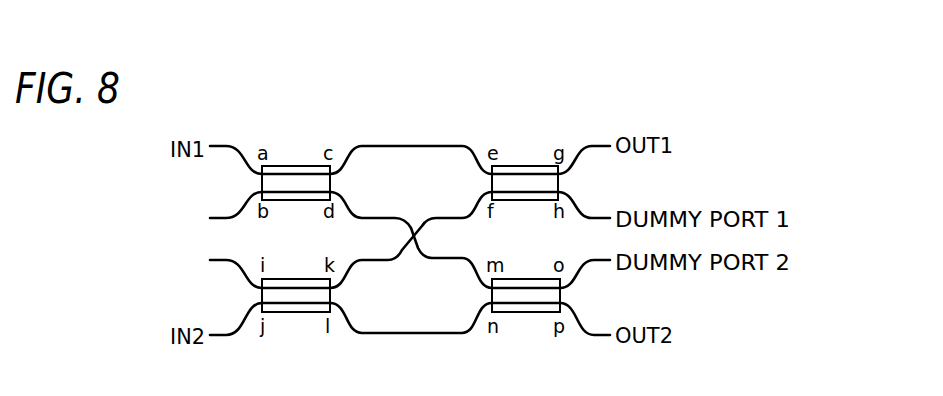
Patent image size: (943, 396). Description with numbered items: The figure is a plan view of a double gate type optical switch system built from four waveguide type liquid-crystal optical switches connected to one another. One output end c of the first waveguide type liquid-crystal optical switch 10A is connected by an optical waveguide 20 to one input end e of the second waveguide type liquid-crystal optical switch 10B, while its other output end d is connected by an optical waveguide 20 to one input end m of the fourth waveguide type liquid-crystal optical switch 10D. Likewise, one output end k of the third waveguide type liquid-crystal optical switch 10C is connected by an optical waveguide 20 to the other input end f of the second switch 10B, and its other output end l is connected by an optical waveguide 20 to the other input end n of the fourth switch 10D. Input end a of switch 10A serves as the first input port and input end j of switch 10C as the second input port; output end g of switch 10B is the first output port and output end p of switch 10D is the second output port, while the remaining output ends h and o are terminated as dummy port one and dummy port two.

The first waveguide type liquid-crystal optical switch 10A is at (289, 181).
The second waveguide type liquid-crystal optical switch 10B is at (516, 181).
The third waveguide type liquid-crystal optical switch 10C is at (288, 299).
The fourth waveguide type liquid-crystal optical switch 10D is at (518, 299).
The optical waveguide 20 is at (403, 145).